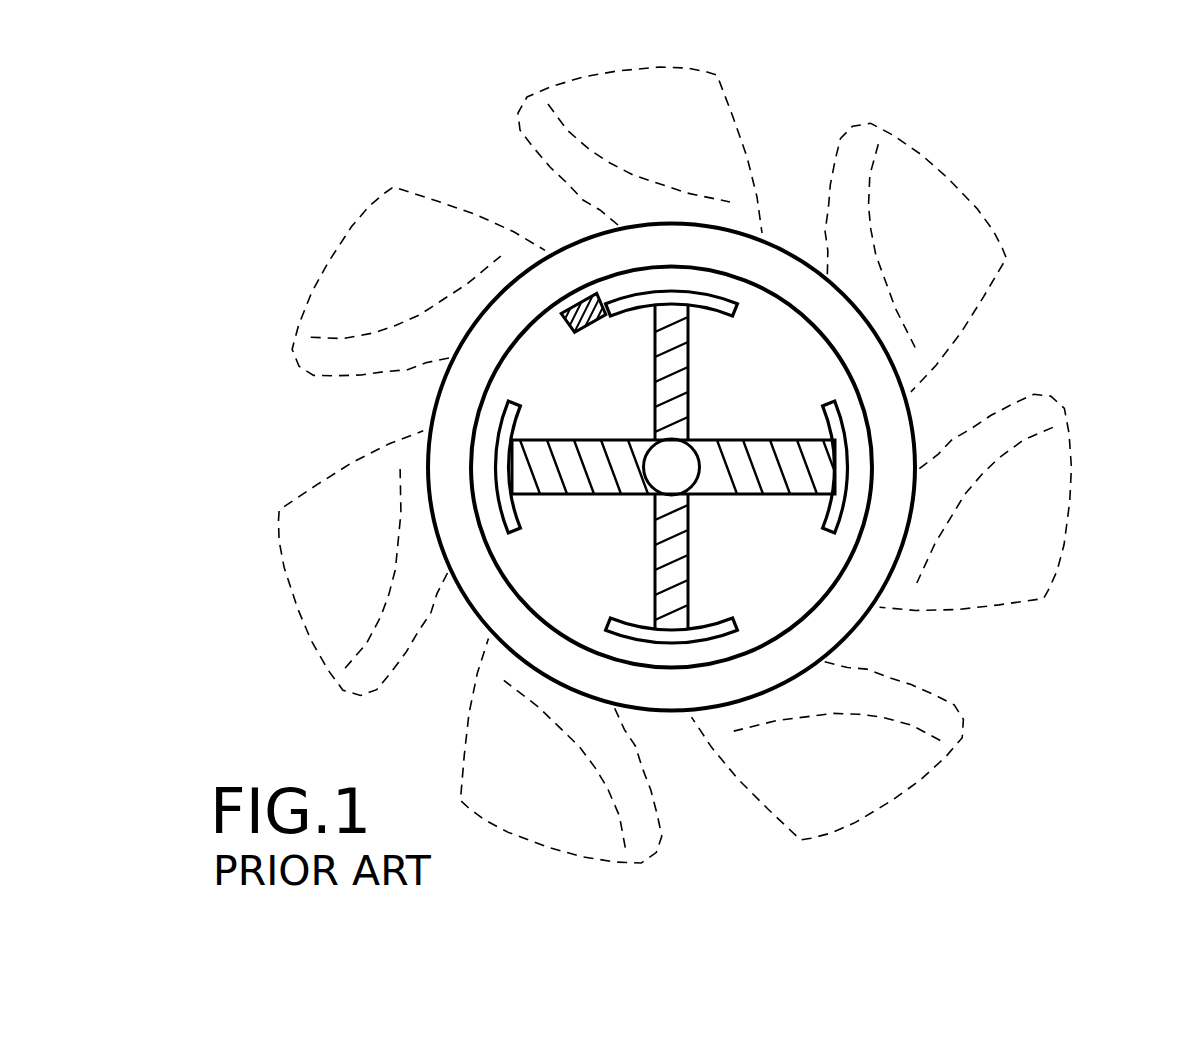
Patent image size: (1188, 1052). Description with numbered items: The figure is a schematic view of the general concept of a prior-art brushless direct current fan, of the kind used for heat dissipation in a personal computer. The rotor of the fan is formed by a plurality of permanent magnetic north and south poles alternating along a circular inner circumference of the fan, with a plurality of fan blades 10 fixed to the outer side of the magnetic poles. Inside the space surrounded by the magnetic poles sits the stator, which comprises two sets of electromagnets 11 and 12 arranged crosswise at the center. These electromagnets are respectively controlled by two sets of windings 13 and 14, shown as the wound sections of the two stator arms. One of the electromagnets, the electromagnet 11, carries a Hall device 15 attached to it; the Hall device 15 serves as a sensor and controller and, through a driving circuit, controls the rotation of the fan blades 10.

The fan blades 10 is at (940, 211).
The electromagnet 11 is at (735, 296).
The electromagnet 12 is at (510, 422).
The windings 13 is at (672, 562).
The windings 14 is at (783, 465).
The Hall device 15 is at (584, 292).